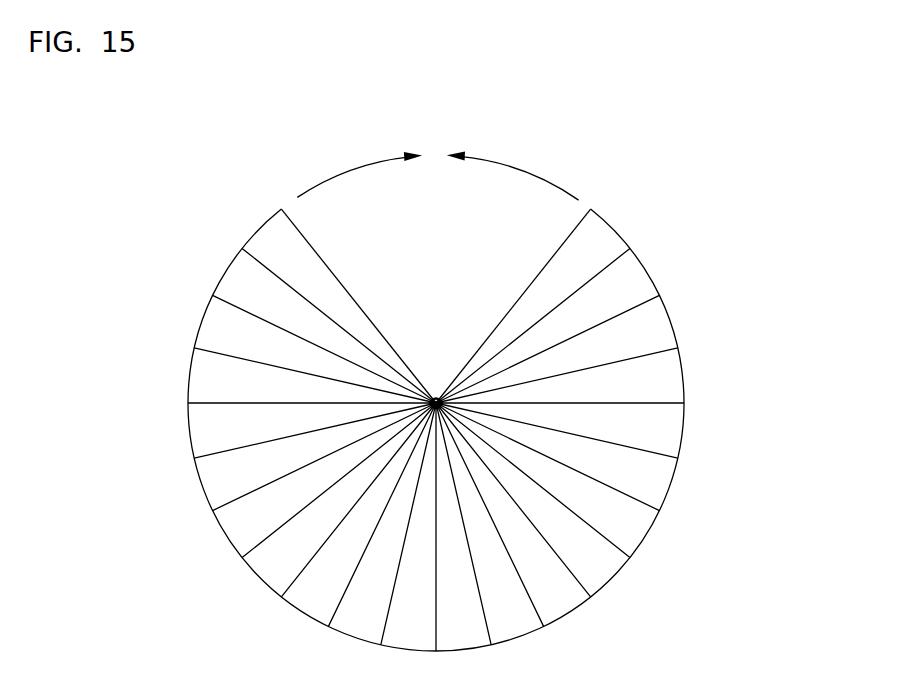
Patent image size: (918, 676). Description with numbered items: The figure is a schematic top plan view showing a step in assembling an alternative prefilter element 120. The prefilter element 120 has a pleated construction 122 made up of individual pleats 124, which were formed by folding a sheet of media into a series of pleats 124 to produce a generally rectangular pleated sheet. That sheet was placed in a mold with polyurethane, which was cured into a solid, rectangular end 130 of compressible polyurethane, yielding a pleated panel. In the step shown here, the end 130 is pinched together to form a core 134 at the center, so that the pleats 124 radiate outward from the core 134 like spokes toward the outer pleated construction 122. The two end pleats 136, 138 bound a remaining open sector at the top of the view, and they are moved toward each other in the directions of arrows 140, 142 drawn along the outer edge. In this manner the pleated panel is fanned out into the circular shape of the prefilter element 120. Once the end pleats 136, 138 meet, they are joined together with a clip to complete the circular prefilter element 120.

The prefilter element 120 is at (200, 218).
The pleated construction 122 is at (668, 312).
The pleats 124 is at (652, 403).
The end 130 is at (432, 396).
The core 134 is at (439, 395).
The end pleat 136 is at (320, 253).
The end pleat 138 is at (550, 258).
The arrow 140 is at (363, 165).
The arrow 142 is at (518, 167).